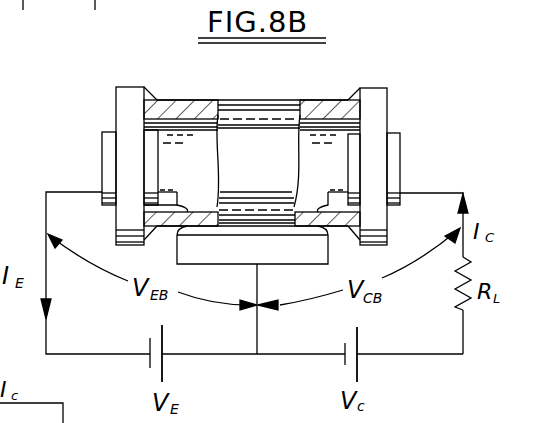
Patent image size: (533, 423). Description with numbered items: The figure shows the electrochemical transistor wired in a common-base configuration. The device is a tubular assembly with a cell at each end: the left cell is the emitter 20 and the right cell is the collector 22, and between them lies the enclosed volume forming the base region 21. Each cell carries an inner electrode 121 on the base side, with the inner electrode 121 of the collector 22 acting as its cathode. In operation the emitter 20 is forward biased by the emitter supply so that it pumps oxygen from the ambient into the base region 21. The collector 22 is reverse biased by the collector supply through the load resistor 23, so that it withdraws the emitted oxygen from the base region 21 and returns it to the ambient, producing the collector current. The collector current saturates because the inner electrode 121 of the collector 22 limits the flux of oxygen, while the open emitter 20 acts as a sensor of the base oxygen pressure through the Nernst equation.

The emitter 20 is at (125, 104).
The base region 21 is at (260, 125).
The collector 22 is at (375, 122).
The load resistor 23 is at (455, 290).
The inner electrode 121 is at (112, 163).